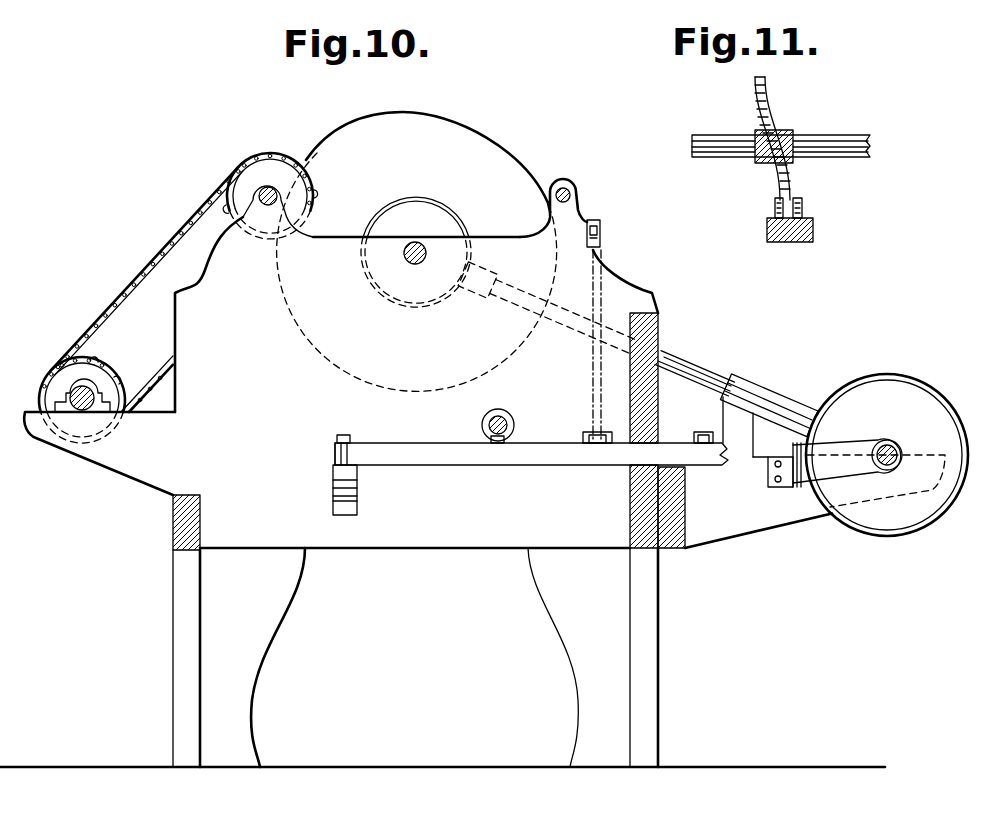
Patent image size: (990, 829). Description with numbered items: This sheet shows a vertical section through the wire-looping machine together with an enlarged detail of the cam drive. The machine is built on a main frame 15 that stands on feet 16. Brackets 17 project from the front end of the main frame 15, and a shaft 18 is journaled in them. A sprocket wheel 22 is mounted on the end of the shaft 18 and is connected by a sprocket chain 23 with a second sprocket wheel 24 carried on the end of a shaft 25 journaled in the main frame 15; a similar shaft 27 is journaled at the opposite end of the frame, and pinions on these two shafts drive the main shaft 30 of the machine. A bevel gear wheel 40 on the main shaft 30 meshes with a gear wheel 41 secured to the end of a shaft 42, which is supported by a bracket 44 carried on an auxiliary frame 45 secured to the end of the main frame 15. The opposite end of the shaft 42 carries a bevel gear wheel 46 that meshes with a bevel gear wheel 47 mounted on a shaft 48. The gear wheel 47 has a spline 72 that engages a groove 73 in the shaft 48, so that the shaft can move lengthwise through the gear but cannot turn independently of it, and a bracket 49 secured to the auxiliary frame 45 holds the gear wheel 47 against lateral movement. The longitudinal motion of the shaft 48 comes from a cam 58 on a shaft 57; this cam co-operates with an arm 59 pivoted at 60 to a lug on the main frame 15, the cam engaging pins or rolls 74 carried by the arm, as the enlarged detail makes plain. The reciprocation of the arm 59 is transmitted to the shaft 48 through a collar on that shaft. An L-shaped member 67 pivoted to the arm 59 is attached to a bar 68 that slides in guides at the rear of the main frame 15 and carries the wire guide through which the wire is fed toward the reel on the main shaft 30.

In FIG. 10, the main frame 15 is at (416, 330).
In FIG. 10, the feet 16 is at (442, 657).
In FIG. 10, the brackets 17 is at (112, 481).
In FIG. 10, the shaft 18 is at (80, 406).
In FIG. 10, the sprocket wheel 22 is at (100, 374).
In FIG. 10, the sprocket chain 23 is at (181, 227).
In FIG. 10, the sprocket wheel 24 is at (273, 168).
In FIG. 10, the shaft 25 is at (264, 208).
In FIG. 10, the shaft 27 is at (570, 190).
In FIG. 10, the main shaft 30 is at (413, 263).
In FIG. 10, the bevel gear wheel 40 is at (420, 209).
In FIG. 10, the gear wheel 41 is at (478, 258).
In FIG. 10, the shaft 42 is at (690, 366).
In FIG. 10, the bracket 44 is at (764, 400).
In FIG. 10, the auxiliary frame 45 is at (745, 490).
In FIG. 10, the bevel gear wheel 46 is at (820, 405).
In FIG. 10, the bevel gear wheel 47 is at (887, 455).
In FIG. 10, the shaft 48 is at (895, 448).
In FIG. 10, the bracket 49 is at (848, 446).
In FIG. 10, the shaft 57 is at (489, 422).
In FIG. 11, the shaft 57 is at (711, 150).
In FIG. 10, the cam 58 is at (502, 412).
In FIG. 11, the cam 58 is at (756, 95).
In FIG. 10, the arm 59 is at (562, 464).
In FIG. 11, the arm 59 is at (790, 243).
In FIG. 10, the pivot 60 is at (343, 437).
In FIG. 10, the L-shaped member 67 is at (593, 386).
In FIG. 10, the bar 68 is at (603, 236).
In FIG. 10, the spline 72 is at (885, 470).
In FIG. 10, the groove 73 is at (901, 458).
In FIG. 10, the pins or rolls 74 is at (510, 440).
In FIG. 11, the pins or rolls 74 is at (774, 208).